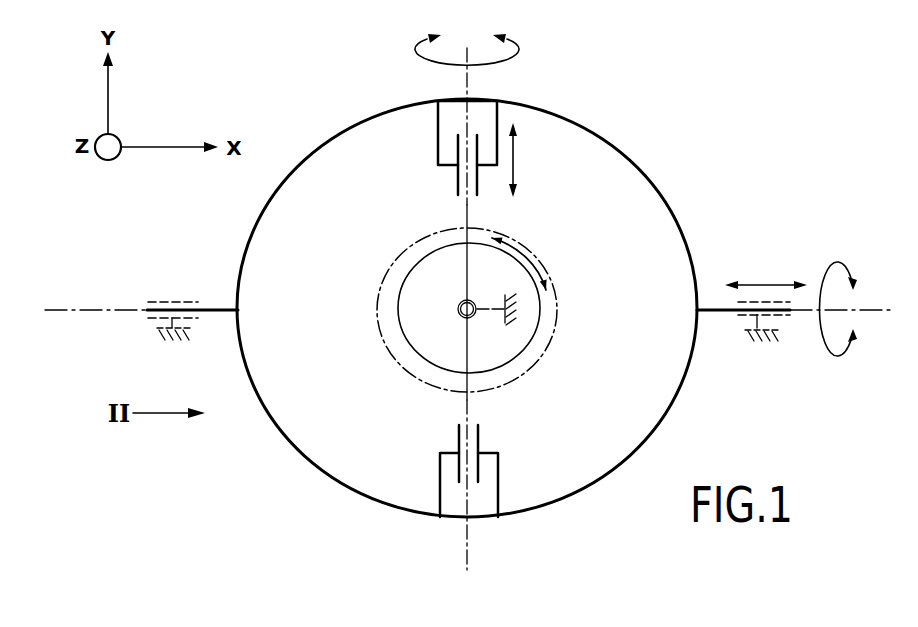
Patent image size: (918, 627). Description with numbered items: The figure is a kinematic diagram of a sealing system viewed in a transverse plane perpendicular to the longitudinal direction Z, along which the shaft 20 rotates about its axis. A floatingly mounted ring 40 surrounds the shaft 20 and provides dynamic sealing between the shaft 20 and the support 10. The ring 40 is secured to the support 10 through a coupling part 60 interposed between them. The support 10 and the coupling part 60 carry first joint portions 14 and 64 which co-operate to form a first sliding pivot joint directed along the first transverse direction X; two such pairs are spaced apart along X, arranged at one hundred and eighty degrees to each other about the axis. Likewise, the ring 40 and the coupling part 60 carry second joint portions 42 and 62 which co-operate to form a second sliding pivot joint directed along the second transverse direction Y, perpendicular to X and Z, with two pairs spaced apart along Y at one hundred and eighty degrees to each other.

The support 10 is at (762, 340).
The first joint portion 14 is at (790, 318).
The shaft 20 is at (443, 320).
The floatingly mounted ring 40 is at (556, 333).
The second joint portion 42 is at (459, 141).
The coupling part 60 is at (603, 137).
The second joint portion 62 is at (457, 183).
The first joint portion 64 is at (717, 313).